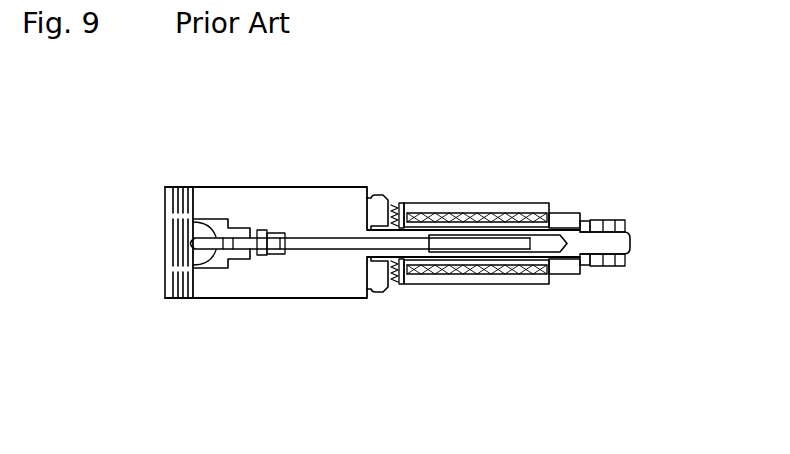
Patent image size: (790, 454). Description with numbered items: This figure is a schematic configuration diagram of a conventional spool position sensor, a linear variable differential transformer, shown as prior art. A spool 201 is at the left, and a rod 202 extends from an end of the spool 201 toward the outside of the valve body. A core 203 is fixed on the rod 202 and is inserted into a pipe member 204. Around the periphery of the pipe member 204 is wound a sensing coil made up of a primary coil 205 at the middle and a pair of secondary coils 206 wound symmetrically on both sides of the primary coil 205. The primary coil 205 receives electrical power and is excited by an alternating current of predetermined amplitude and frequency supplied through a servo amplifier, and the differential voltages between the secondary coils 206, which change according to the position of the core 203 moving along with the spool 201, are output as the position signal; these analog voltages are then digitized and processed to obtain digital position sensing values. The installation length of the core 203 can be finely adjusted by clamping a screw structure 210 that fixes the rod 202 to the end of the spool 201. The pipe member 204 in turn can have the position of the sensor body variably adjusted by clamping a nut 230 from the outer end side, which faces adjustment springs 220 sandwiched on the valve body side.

The spool 201 is at (197, 216).
The rod 202 is at (333, 242).
The core 203 is at (477, 242).
The pipe member 204 is at (568, 215).
The primary coil 205 is at (477, 277).
The secondary coils 206 is at (432, 274).
The screw structure 210 is at (235, 269).
The adjustment springs 220 is at (392, 289).
The nut 230 is at (613, 223).